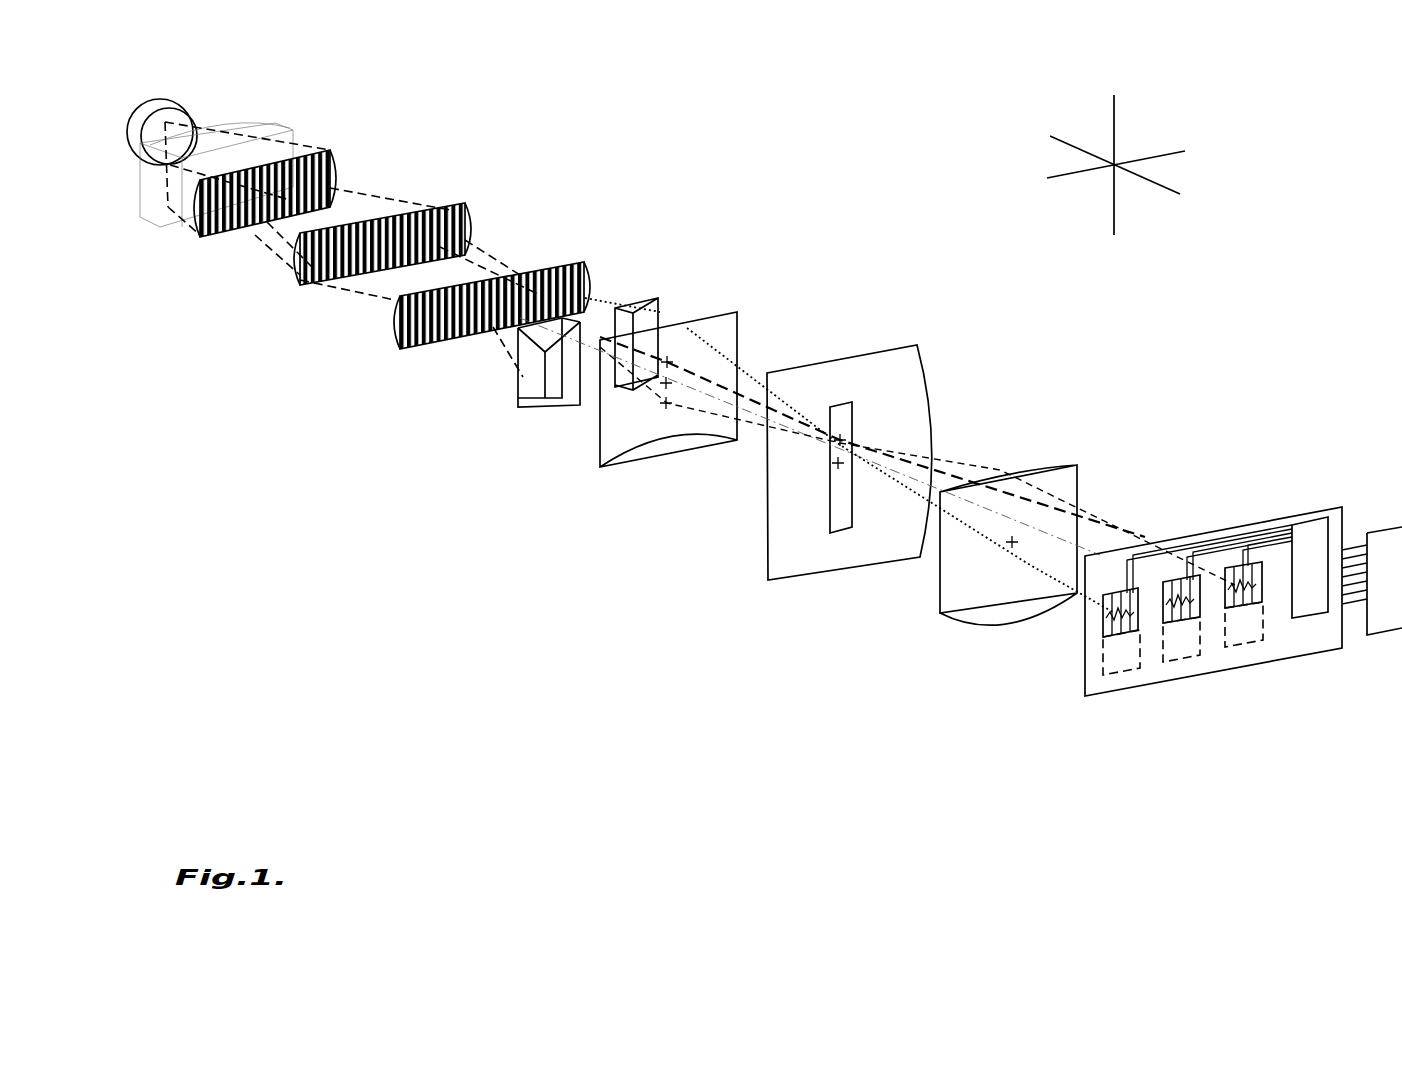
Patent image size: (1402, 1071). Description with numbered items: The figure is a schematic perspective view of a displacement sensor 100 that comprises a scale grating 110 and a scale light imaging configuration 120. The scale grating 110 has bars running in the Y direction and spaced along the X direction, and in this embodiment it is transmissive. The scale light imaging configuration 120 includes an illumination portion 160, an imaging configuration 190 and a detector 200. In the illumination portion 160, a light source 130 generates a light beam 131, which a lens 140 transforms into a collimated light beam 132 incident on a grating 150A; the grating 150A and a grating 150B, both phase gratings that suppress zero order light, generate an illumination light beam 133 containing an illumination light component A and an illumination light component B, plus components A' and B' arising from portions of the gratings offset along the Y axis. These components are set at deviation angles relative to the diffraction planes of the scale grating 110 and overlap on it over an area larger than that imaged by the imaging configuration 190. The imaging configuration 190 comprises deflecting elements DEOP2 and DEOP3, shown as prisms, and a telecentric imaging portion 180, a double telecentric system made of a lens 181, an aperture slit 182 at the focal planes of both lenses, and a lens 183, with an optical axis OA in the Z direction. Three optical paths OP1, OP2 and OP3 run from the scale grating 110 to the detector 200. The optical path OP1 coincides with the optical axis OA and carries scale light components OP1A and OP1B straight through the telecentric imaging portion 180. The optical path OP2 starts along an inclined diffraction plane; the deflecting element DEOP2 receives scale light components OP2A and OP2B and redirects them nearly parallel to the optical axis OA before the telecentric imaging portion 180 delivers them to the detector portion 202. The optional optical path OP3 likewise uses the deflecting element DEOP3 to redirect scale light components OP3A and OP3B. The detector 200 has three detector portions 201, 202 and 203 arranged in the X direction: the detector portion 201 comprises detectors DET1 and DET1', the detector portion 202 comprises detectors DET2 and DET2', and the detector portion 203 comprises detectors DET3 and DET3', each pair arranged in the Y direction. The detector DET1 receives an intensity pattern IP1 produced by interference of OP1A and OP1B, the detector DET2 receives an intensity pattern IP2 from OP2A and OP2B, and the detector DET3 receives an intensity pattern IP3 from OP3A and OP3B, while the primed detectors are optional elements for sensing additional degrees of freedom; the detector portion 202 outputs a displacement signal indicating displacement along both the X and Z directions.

The displacement sensor 100 is at (1275, 102).
The scale grating 110 is at (517, 265).
The scale light imaging configuration 120 is at (348, 631).
The light source 130 is at (170, 103).
The light beam 131 is at (162, 135).
The collimated light beam 132 is at (184, 172).
The illumination light beam 133 is at (420, 263).
The lens 140 is at (282, 133).
The grating 150A is at (313, 150).
The grating 150B is at (433, 205).
The illumination portion 160 is at (372, 52).
The telecentric imaging portion 180 is at (757, 693).
The lens 181 is at (655, 443).
The aperture slit 182 is at (768, 580).
The lens 183 is at (1000, 612).
The imaging configuration 190 is at (633, 728).
The detector 200 is at (1166, 642).
The detector portion 201 is at (1177, 690).
The detector portion 202 is at (1290, 643).
The detector portion 203 is at (1075, 688).
The optical axis OA is at (798, 442).
The optical path OP1 is at (915, 470).
The optical path OP2 is at (900, 455).
The optical path OP3 is at (918, 495).
The scale light component OP1A is at (607, 327).
The scale light component OP1B is at (598, 340).
The scale light component OP2A is at (555, 353).
The scale light component OP2B is at (540, 358).
The scale light component OP3A is at (663, 322).
The scale light component OP3B is at (678, 332).
The deflecting element DEOP2 is at (545, 408).
The deflecting element DEOP3 is at (552, 408).
The detector DET1 is at (1231, 681).
The detector DET1' is at (1237, 718).
The detector DET2 is at (1282, 645).
The detector DET2' is at (1291, 680).
The detector DET3 is at (1034, 683).
The detector DET3' is at (1040, 720).
The intensity pattern IP1 is at (1162, 625).
The intensity pattern IP2 is at (1262, 595).
The intensity pattern IP3 is at (1105, 597).
The illumination light component A is at (378, 305).
The illumination light component A' is at (389, 310).
The illumination light component B is at (502, 222).
The illumination light component B' is at (501, 235).